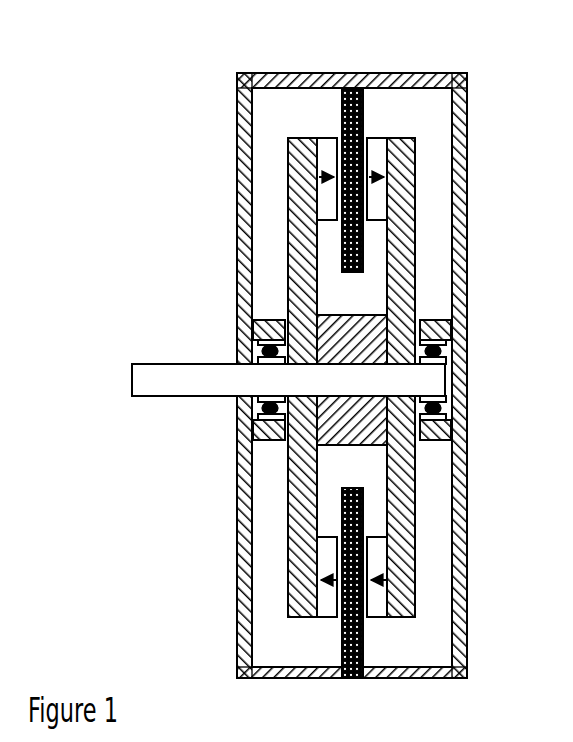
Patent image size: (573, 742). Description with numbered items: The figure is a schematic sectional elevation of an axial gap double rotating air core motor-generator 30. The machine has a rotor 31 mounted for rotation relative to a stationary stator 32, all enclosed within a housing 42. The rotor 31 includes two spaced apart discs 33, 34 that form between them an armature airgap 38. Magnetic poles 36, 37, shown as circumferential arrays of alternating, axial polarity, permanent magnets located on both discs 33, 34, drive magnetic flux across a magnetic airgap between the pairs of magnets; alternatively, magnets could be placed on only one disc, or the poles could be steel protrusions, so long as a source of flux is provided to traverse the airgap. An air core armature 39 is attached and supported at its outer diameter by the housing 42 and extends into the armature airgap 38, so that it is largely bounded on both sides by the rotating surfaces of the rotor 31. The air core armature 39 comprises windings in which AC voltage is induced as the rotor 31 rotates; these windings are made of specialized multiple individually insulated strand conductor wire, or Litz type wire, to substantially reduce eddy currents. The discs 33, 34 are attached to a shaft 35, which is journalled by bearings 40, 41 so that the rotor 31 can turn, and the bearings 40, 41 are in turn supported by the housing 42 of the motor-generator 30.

The axial gap double rotating air core motor-generator 30 is at (297, 350).
The rotor 31 is at (428, 264).
The stator 32 is at (374, 102).
The disc 33 is at (415, 470).
The disc 34 is at (288, 470).
The shaft 35 is at (162, 364).
The magnetic pole 36 is at (386, 618).
The magnetic pole 37 is at (318, 618).
The armature airgap 38 is at (336, 632).
The air core armature 39 is at (349, 487).
The bearing 40 is at (467, 350).
The bearing 41 is at (237, 332).
The housing 42 is at (467, 528).